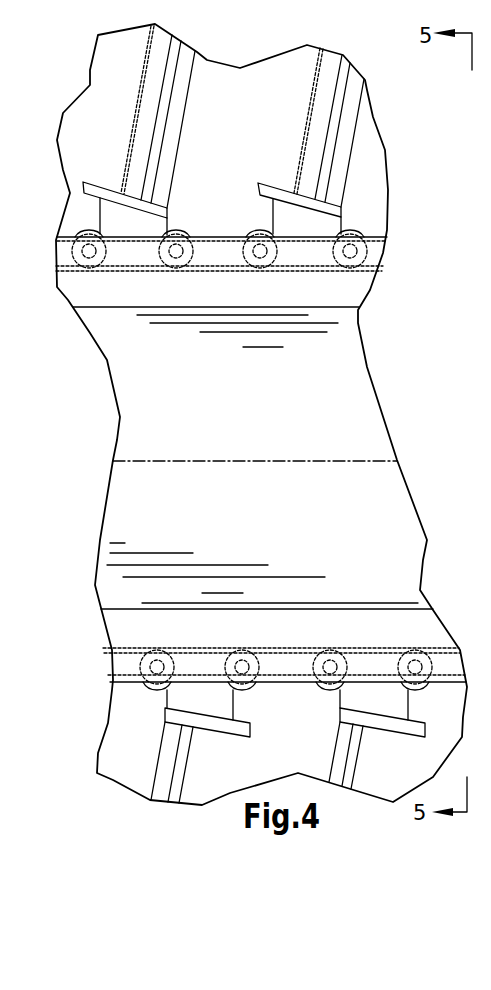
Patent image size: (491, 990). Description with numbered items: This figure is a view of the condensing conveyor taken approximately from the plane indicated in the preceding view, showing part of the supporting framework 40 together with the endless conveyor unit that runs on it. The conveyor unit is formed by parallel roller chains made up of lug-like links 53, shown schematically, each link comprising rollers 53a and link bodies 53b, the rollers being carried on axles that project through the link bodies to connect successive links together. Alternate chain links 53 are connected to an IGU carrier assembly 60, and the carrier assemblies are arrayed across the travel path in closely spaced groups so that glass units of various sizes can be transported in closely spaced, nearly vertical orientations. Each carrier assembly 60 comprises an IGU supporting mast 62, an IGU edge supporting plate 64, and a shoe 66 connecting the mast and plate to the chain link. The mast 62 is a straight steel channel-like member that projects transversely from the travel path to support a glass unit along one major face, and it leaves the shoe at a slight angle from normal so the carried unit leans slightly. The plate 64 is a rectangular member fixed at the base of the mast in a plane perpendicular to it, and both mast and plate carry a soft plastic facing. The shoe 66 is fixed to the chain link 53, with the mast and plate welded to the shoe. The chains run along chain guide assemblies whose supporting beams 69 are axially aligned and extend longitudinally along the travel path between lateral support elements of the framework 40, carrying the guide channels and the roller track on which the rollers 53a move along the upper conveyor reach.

The supporting framework 40 is at (80, 338).
The chain link 53 is at (258, 257).
The roller 53a is at (362, 231).
The link body 53b is at (320, 250).
The IGU carrier assembly 60 is at (338, 141).
The IGU supporting mast 62 is at (352, 118).
The IGU edge supporting plate 64 is at (276, 185).
The shoe 66 is at (300, 226).
The supporting beam 69 is at (324, 515).